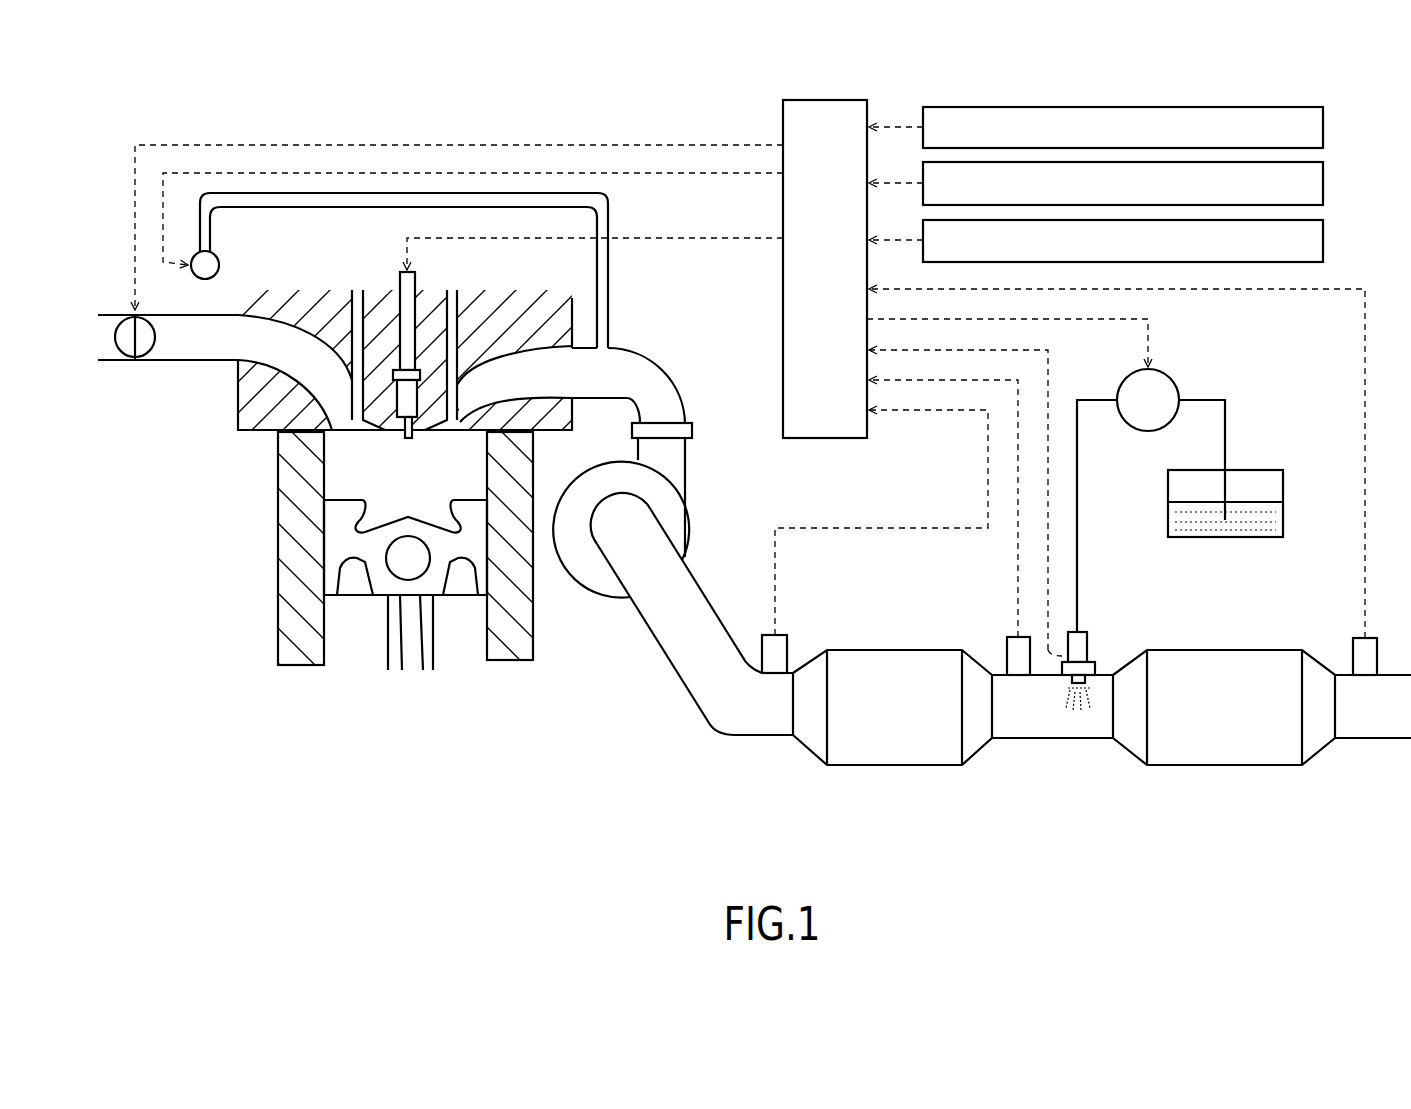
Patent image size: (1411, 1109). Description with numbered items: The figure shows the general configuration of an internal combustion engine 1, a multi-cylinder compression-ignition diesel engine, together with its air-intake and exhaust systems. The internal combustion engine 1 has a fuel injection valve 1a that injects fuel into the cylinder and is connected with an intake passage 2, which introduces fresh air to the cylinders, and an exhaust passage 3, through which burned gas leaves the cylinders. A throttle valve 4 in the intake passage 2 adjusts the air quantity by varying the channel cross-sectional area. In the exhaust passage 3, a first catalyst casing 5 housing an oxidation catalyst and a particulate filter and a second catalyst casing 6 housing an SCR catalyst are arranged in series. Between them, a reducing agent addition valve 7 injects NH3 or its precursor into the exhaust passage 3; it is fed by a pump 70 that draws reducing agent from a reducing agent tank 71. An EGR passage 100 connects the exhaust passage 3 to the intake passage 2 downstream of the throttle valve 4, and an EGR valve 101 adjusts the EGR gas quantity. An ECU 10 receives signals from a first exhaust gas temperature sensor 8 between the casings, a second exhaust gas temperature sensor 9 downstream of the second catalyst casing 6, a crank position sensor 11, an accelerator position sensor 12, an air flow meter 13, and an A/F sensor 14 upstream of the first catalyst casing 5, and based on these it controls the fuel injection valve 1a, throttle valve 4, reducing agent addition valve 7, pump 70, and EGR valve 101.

The internal combustion engine 1 is at (262, 566).
The fuel injection valve 1a is at (418, 277).
The intake passage 2 is at (183, 362).
The exhaust passage 3 is at (665, 364).
The throttle valve 4 is at (127, 362).
The first catalyst casing 5 is at (905, 768).
The second catalyst casing 6 is at (1240, 768).
The reducing agent addition valve 7 is at (1090, 640).
The first exhaust gas temperature sensor 8 is at (1007, 640).
The second exhaust gas temperature sensor 9 is at (1353, 640).
The ECU 10 is at (826, 100).
The crank position sensor 11 is at (1325, 237).
The accelerator position sensor 12 is at (1325, 180).
The air flow meter 13 is at (1325, 124).
The A/F sensor 14 is at (790, 640).
The pump 70 is at (1170, 380).
The reducing agent tank 71 is at (1265, 468).
The EGR passage 100 is at (612, 208).
The EGR valve 101 is at (219, 262).